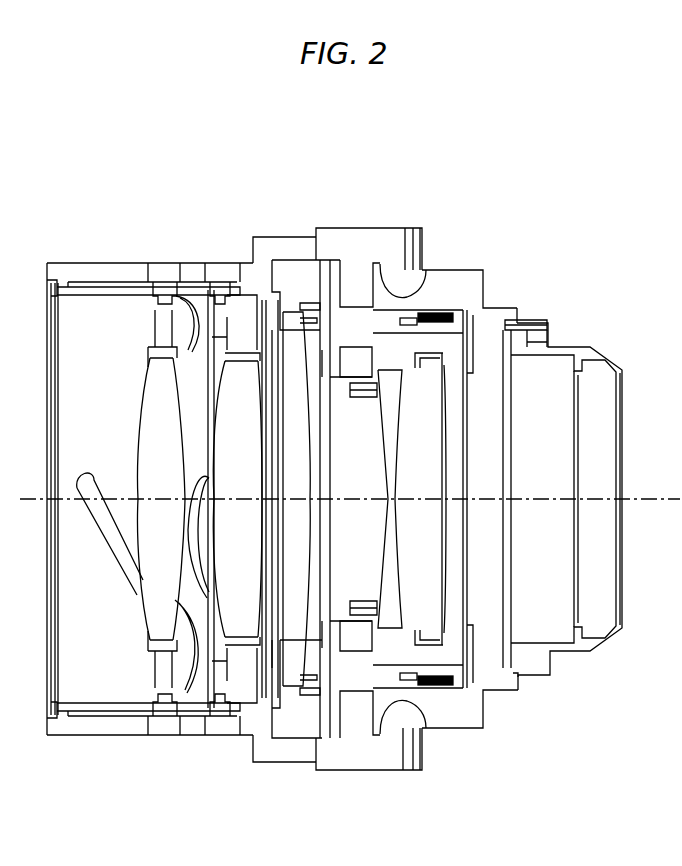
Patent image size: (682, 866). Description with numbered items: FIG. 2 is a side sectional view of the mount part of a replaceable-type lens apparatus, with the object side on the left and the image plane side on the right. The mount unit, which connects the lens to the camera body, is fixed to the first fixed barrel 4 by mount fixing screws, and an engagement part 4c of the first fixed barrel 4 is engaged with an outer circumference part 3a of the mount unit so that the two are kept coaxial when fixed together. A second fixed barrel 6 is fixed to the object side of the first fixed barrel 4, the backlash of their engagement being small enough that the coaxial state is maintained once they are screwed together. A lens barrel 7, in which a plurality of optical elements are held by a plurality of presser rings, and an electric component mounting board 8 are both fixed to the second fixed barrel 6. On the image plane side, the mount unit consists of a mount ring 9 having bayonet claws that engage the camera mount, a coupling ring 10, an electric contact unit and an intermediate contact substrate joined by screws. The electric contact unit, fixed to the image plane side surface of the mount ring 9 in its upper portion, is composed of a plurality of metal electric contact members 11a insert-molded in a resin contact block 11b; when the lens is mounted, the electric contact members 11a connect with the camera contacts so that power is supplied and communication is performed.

The outer circumference part 3a is at (392, 737).
The first fixed barrel 4 is at (346, 243).
The engagement part 4c is at (426, 268).
The second fixed barrel 6 is at (275, 247).
The lens barrel 7 is at (322, 634).
The electric component mounting board 8 is at (327, 275).
The mount ring 9 is at (538, 658).
The coupling ring 10 is at (460, 708).
The electric contact members 11a is at (535, 328).
The contact block 11b is at (550, 343).